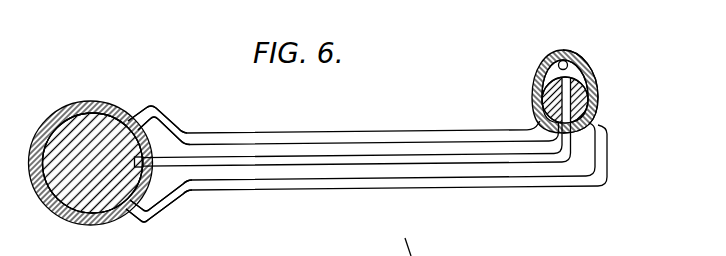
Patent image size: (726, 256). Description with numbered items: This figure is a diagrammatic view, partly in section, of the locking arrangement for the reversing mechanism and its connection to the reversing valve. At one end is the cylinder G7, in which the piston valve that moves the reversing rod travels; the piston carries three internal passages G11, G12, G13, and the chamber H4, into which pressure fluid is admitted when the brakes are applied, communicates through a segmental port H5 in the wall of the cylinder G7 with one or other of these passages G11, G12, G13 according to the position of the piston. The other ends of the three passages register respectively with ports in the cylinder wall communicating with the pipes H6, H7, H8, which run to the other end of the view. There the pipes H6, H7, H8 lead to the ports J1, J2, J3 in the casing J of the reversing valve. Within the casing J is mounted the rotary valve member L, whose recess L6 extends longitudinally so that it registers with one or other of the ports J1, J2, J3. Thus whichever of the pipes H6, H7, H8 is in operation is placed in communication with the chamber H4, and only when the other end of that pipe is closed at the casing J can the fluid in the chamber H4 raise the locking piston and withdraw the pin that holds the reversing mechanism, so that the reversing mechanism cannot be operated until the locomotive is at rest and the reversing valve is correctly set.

The casing of the reversing valve J is at (62, 113).
The port J1 is at (135, 113).
The port J2 is at (145, 157).
The port J3 is at (143, 223).
The rotary valve member L is at (57, 212).
The recess L6 is at (112, 200).
The pipe H6 is at (367, 133).
The pipe H7 is at (411, 156).
The pipe H8 is at (364, 188).
The chamber H4 is at (562, 60).
The segmental port H5 is at (582, 58).
The internal passage G12 is at (553, 67).
The internal passage G13 is at (543, 93).
The internal passage G11 is at (587, 92).
The cylinder G7 is at (598, 105).